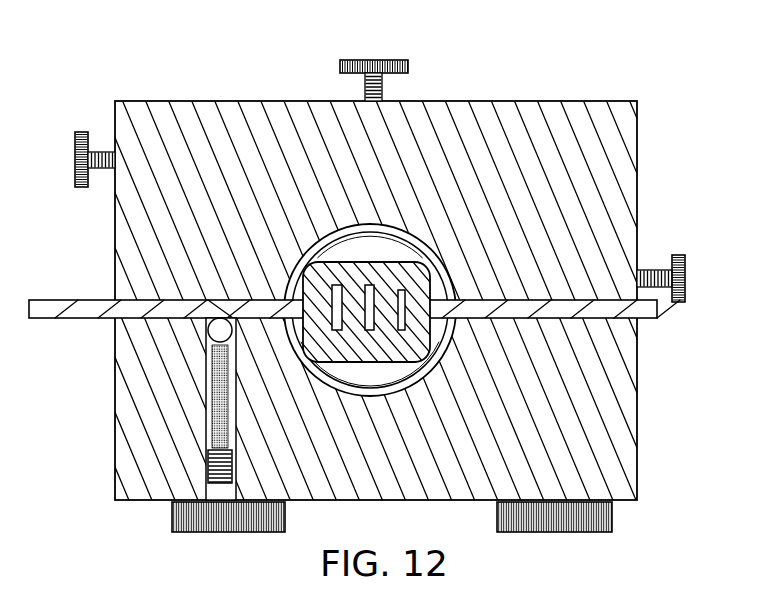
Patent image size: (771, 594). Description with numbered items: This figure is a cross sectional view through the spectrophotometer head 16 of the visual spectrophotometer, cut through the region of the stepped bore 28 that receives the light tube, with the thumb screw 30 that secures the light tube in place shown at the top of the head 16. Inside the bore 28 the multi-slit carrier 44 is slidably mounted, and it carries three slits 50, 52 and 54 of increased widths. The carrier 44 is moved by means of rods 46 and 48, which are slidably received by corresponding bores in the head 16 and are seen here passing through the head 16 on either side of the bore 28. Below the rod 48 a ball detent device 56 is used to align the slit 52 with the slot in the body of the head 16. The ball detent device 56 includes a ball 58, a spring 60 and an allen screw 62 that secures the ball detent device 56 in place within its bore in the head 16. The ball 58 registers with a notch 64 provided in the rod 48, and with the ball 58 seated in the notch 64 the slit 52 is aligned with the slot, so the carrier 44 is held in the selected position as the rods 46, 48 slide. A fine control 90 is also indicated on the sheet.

The spectrophotometer head 16 is at (674, 463).
The stepped bore 28 is at (368, 228).
The thumb screw 30 is at (371, 60).
The multi-slit carrier 44 is at (430, 272).
The rod 46 is at (652, 308).
The rod 48 is at (44, 308).
The slit 50 is at (401, 330).
The slit 52 is at (370, 330).
The slit 54 is at (333, 330).
The ball detent device 56 is at (240, 456).
The ball 58 is at (216, 331).
The spring 60 is at (220, 416).
The allen screw 62 is at (212, 463).
The notch 64 is at (220, 302).
The fine control 90 is at (75, 167).